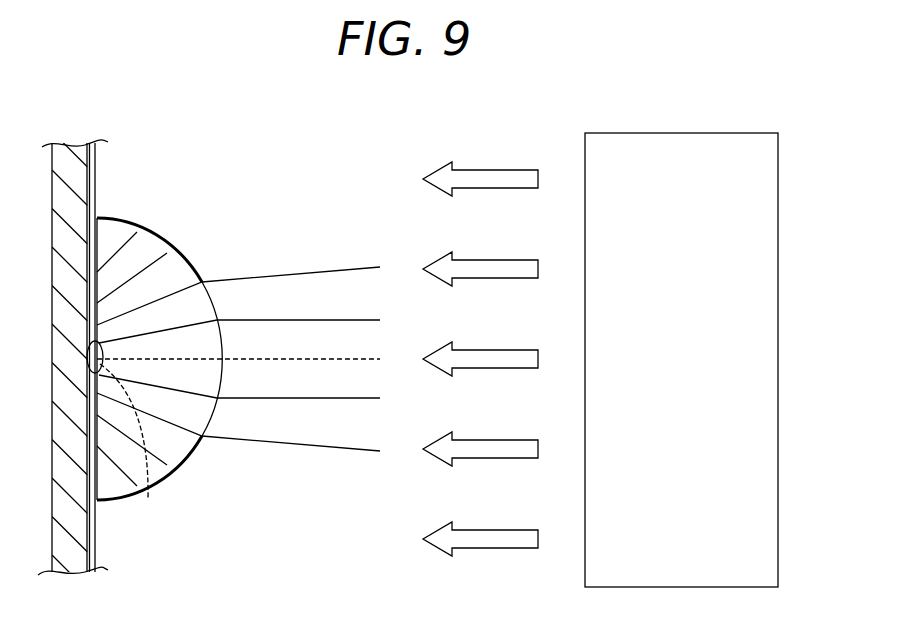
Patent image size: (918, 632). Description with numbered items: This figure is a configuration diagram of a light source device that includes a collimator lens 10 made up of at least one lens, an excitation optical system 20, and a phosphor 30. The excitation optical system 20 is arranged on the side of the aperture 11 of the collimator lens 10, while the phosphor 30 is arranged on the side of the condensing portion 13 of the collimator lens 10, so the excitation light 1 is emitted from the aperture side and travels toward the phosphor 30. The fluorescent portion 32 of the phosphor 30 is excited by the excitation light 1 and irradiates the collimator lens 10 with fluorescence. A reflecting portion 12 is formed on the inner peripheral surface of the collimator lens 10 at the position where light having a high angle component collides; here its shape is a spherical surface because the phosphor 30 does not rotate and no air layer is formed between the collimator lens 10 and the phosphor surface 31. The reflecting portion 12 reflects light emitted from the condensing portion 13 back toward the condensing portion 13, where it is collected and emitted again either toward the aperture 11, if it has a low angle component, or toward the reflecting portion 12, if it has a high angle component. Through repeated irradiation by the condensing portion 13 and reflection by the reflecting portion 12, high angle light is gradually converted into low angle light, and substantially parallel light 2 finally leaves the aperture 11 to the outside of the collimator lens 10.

The excitation light 1 is at (505, 170).
The substantially parallel light 2 is at (333, 267).
The collimator lens 10 is at (185, 355).
The aperture 11 is at (224, 340).
The reflecting portion 12 is at (162, 232).
The condensing portion 13 is at (148, 500).
The excitation optical system 20 is at (681, 133).
The phosphor 30 is at (108, 361).
The phosphor surface 31 is at (93, 163).
The fluorescent portion 32 is at (77, 183).